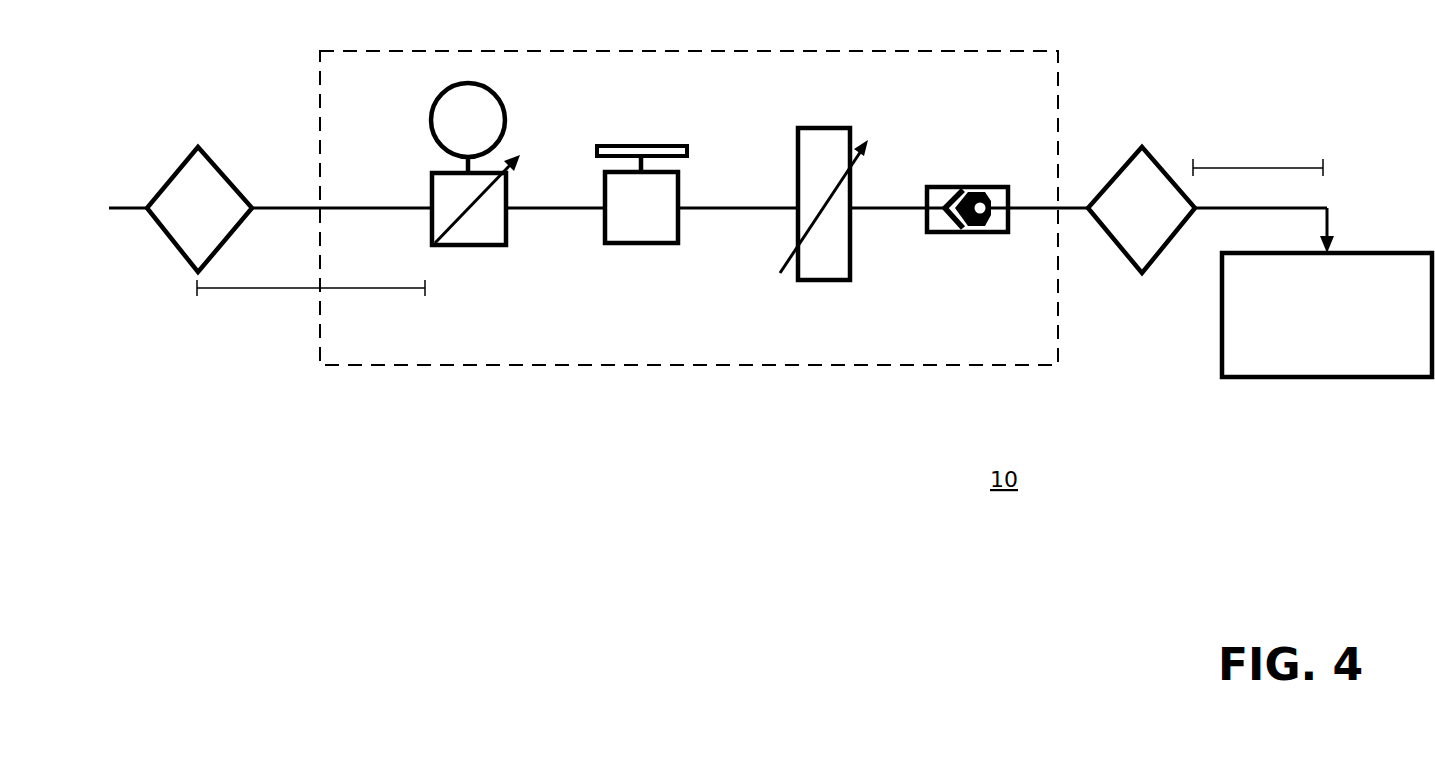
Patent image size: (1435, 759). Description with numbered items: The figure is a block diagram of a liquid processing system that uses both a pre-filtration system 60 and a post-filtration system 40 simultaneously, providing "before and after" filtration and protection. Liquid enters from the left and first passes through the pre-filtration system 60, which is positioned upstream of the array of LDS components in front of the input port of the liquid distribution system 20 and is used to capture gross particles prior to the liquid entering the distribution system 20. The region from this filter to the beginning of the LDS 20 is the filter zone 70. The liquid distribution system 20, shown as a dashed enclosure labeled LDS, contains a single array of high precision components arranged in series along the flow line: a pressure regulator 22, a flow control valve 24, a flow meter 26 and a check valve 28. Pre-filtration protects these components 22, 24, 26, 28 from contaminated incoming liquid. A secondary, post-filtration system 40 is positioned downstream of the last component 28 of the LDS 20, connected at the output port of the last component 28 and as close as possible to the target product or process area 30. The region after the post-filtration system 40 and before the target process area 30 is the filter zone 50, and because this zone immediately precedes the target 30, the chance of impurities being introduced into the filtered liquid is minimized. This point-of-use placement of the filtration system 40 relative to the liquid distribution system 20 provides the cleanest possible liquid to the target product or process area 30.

The liquid distribution system 20 is at (787, 51).
The pressure regulator 22 is at (453, 247).
The flow control valve 24 is at (622, 247).
The flow meter 26 is at (810, 282).
The check valve 28 is at (950, 235).
The target product or process area 30 is at (1242, 380).
The post-filtration system 40 is at (1120, 168).
The filter zone 50 is at (1299, 131).
The pre-filtration system 60 is at (178, 168).
The filter zone 70 is at (251, 327).